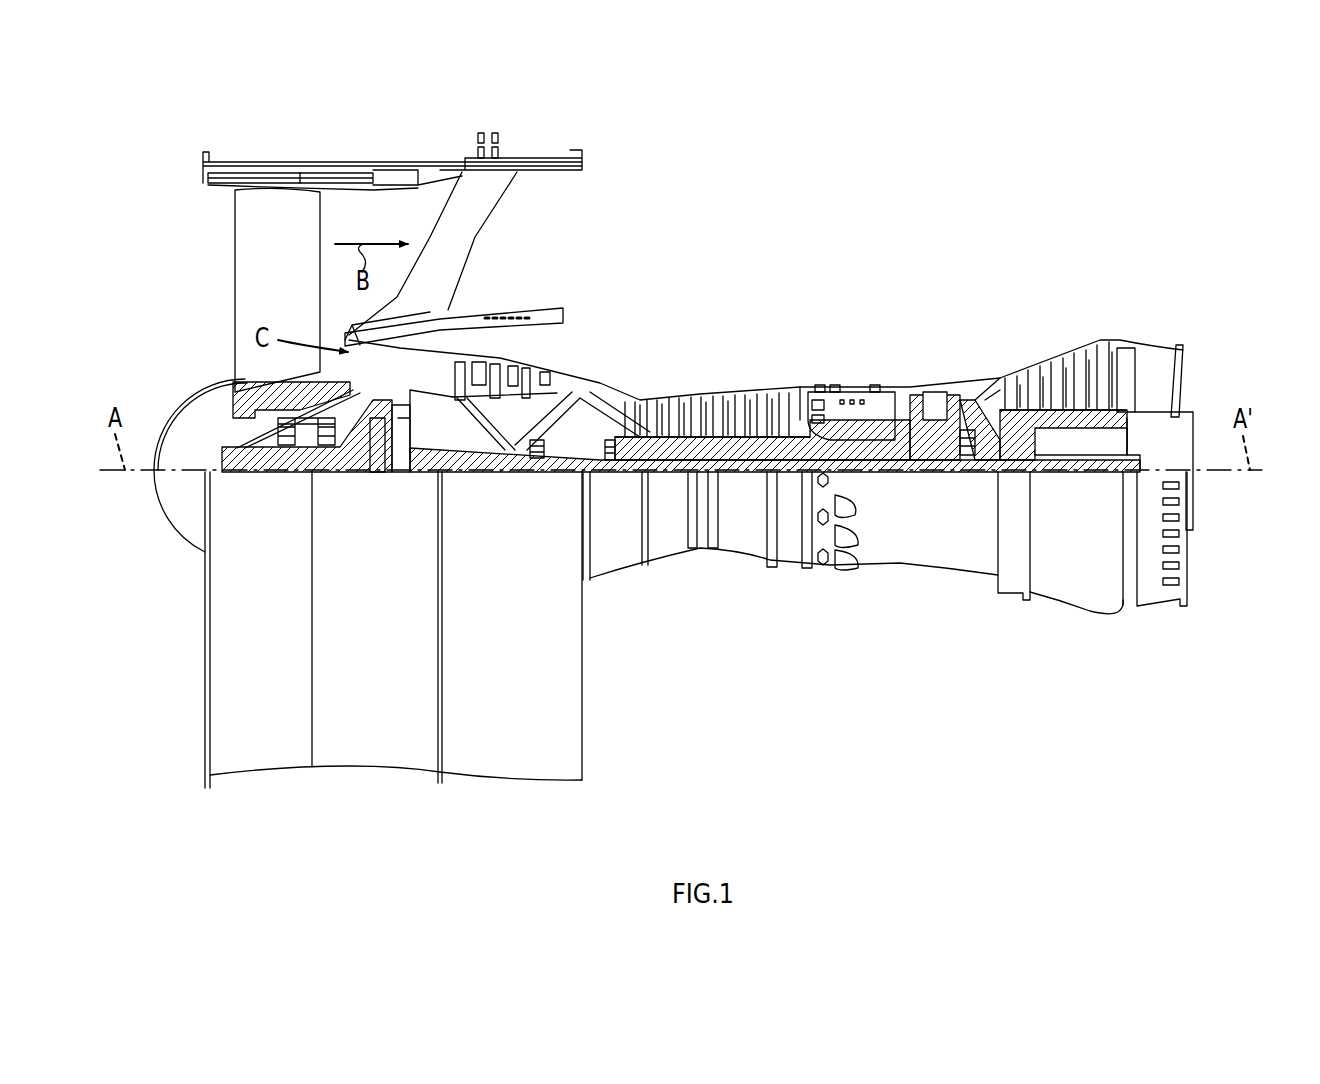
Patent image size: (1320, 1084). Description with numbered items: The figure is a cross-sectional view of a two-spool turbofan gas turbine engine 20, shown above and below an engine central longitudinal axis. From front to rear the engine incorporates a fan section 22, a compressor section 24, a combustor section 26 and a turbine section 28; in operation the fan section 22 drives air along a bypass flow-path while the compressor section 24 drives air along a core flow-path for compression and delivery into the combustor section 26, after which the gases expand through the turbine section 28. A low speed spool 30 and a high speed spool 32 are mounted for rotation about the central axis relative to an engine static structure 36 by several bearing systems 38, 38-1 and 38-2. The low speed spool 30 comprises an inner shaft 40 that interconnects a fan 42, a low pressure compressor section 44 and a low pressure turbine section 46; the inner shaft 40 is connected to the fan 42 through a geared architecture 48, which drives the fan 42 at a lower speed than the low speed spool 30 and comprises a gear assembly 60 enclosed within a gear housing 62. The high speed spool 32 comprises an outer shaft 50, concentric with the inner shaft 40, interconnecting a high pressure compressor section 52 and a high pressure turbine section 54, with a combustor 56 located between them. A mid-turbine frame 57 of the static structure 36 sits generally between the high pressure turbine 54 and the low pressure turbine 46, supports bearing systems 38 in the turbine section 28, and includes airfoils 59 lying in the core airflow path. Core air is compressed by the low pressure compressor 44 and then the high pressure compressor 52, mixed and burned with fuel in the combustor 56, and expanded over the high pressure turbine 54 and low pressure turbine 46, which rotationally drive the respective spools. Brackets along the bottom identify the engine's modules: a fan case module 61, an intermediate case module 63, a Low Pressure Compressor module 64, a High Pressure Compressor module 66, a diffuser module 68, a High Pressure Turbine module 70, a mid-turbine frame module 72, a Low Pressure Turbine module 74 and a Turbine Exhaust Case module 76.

The gas turbine engine 20 is at (912, 196).
The fan section 22 is at (200, 146).
The compressor section 24 is at (445, 276).
The combustor section 26 is at (812, 276).
The turbine section 28 is at (1130, 276).
The low speed spool 30 is at (752, 480).
The high speed spool 32 is at (785, 432).
The engine static structure 36 is at (185, 795).
The bearing system 38 is at (967, 475).
The bearing system 38-1 is at (288, 447).
The bearing system 38-2 is at (537, 465).
The inner shaft 40 is at (603, 472).
The fan 42 is at (285, 289).
The low pressure compressor section 44 is at (515, 368).
The low pressure turbine section 46 is at (1062, 356).
The geared architecture 48 is at (403, 486).
The outer shaft 50 is at (857, 455).
The high pressure compressor section 52 is at (727, 430).
The high pressure turbine section 54 is at (934, 392).
The combustor 56 is at (858, 405).
The mid-turbine frame 57 is at (968, 405).
The airfoils 59 is at (985, 400).
The gear assembly 60 is at (410, 452).
The fan case module 61 is at (210, 802).
The gear housing 62 is at (408, 425).
The intermediate case module 63 is at (348, 802).
The Low Pressure Compressor (LPC) module 64 is at (582, 802).
The High Pressure Compressor (HPC) module 66 is at (790, 802).
The diffuser module 68 is at (790, 802).
The High Pressure Turbine (HPT) module 70 is at (975, 802).
The mid-turbine frame (MTF) module 72 is at (1030, 802).
The Low Pressure Turbine (LPT) module 74 is at (1130, 802).
The Turbine Exhaust Case (TEC) module 76 is at (1187, 802).